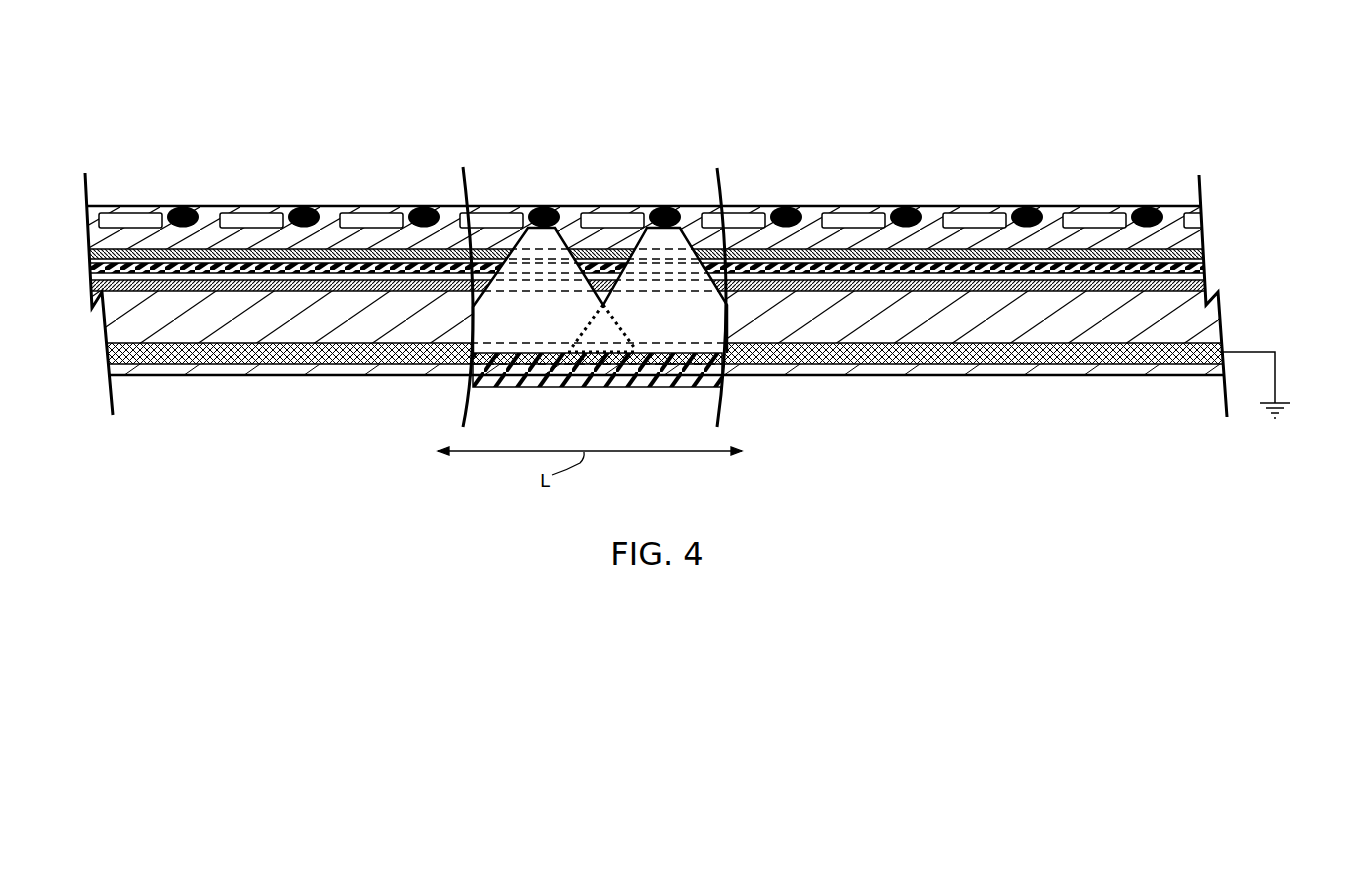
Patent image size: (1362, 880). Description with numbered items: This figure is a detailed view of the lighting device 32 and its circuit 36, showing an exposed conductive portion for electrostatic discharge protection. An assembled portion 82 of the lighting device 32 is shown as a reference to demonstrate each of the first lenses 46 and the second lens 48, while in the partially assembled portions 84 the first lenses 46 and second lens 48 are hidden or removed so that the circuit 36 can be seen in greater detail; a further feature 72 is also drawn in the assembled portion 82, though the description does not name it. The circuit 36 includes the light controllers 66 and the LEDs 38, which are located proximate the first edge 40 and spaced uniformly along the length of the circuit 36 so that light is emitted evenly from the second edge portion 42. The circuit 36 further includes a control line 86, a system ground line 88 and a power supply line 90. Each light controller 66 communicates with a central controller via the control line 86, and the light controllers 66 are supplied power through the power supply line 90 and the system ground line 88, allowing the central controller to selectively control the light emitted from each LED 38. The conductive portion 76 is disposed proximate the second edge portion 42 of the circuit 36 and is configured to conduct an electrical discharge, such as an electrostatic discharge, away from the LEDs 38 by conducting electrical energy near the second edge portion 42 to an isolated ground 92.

The lighting device 32 is at (751, 66).
The circuit 36 is at (303, 322).
The LEDs 38 is at (186, 212).
The first edge 40 is at (116, 200).
The second edge portion 42 is at (155, 377).
The first lenses 46 is at (522, 316).
The second lens 48 is at (532, 385).
The light controllers 66 is at (137, 217).
The junction region 72 is at (602, 333).
The conductive portion 76 is at (214, 365).
The assembled portion 82 is at (594, 168).
The partially assembled portions 84 is at (256, 197).
The control line 86 is at (90, 268).
The system ground line 88 is at (92, 243).
The power supply line 90 is at (120, 293).
The isolated ground 92 is at (1277, 388).